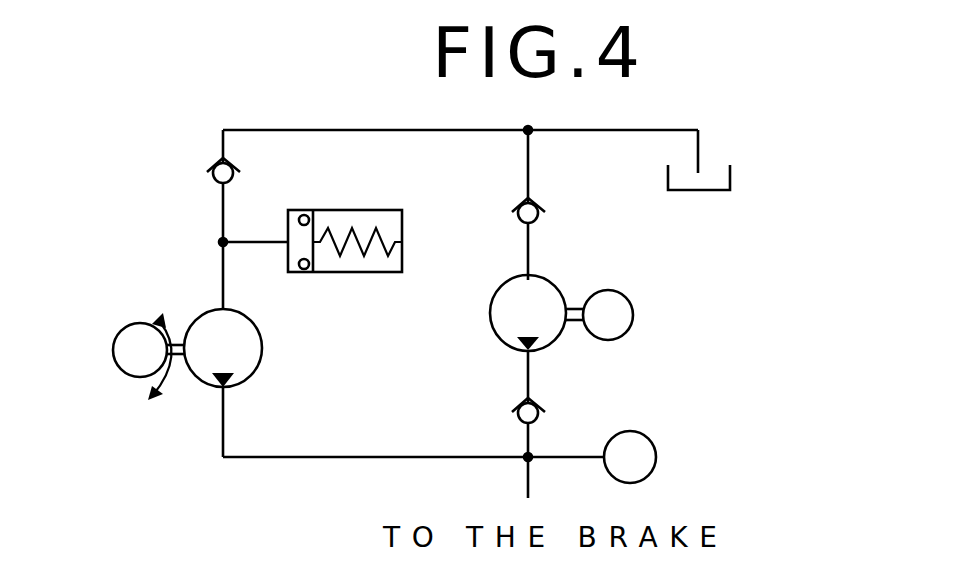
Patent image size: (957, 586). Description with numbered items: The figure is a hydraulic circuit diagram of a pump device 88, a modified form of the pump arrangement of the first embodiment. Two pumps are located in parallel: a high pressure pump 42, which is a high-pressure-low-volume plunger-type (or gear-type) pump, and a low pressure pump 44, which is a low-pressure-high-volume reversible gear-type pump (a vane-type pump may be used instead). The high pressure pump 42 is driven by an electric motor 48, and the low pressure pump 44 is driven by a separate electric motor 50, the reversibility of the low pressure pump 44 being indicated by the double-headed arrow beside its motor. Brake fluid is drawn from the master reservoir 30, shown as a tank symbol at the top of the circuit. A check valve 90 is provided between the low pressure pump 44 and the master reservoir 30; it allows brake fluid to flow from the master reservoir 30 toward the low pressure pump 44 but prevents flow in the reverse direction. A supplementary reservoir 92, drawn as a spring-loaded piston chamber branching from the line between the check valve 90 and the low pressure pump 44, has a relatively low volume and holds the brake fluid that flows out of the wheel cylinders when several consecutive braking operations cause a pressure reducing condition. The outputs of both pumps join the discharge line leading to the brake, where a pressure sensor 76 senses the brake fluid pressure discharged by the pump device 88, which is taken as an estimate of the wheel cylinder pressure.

The pump device 88 is at (156, 205).
The check valve 90 is at (212, 165).
The supplementary reservoir 92 is at (380, 218).
The master reservoir 30 is at (712, 182).
The high pressure pump 42 is at (502, 310).
The electric motor 48 is at (605, 293).
The low pressure pump 44 is at (257, 352).
The electric motor 50 is at (143, 327).
The pressure sensor 76 is at (627, 438).